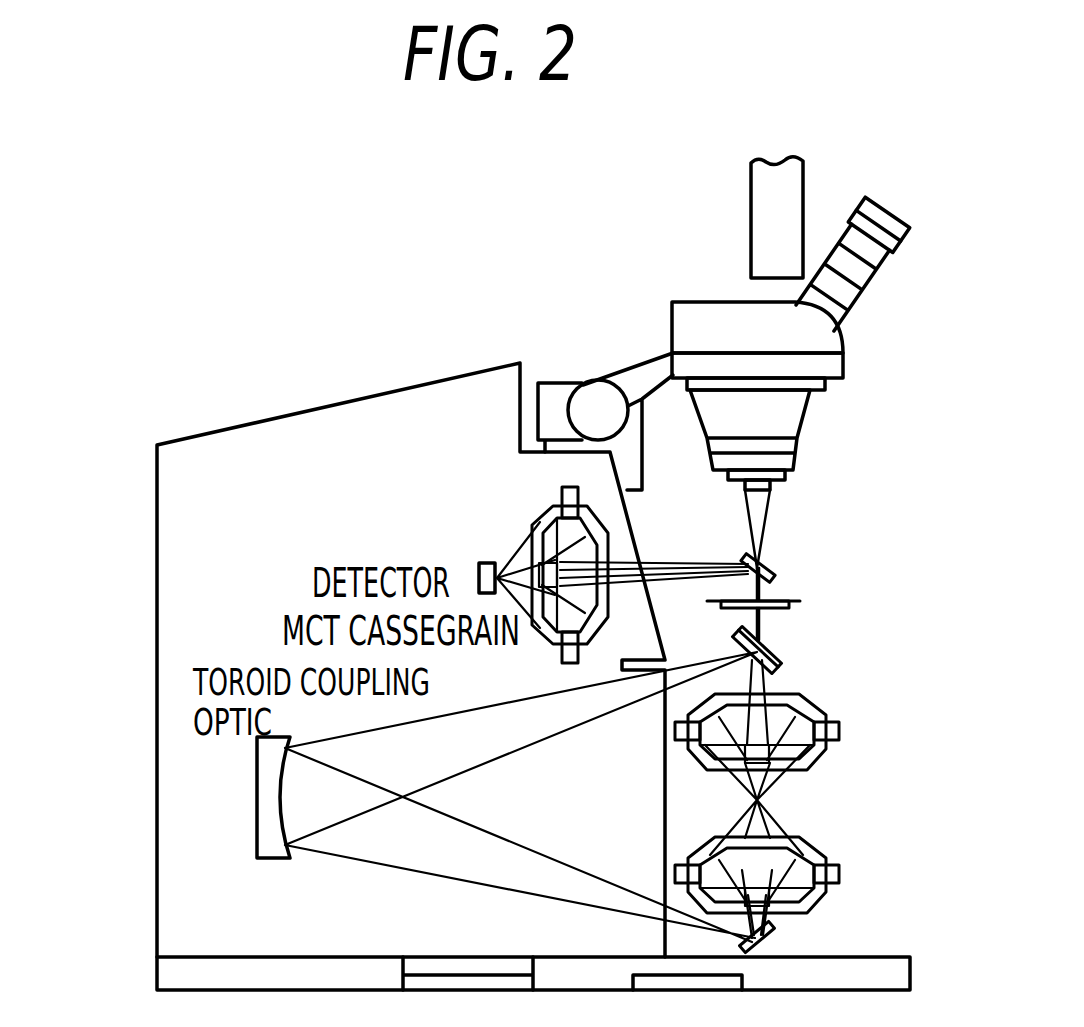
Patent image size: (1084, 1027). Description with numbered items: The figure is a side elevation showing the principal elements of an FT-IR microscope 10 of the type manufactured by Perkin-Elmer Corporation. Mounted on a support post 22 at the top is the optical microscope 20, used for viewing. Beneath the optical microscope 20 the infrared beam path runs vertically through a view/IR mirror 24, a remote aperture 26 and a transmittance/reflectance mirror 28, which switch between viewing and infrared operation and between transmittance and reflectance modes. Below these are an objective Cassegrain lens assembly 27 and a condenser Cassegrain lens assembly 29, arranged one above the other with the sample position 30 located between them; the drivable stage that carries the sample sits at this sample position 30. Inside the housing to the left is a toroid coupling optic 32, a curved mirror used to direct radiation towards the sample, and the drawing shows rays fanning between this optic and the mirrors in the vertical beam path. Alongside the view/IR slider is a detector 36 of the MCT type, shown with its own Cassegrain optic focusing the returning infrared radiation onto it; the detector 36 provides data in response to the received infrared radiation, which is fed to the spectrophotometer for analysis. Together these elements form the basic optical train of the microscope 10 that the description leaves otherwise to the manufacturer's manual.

The microscope 10 is at (112, 642).
The optical microscope 20 is at (782, 410).
The microscope support post 22 is at (753, 218).
The view/IR mirror 24 is at (775, 578).
The remote aperture 26 is at (805, 602).
The objective Cassegrain lens assembly 27 is at (822, 758).
The transmittance/reflectance mirror 28 is at (786, 662).
The condenser Cassegrain lens assembly 29 is at (812, 903).
The sample position 30 is at (757, 802).
The toroid coupling optic 32 is at (255, 790).
The detector 36 is at (485, 545).